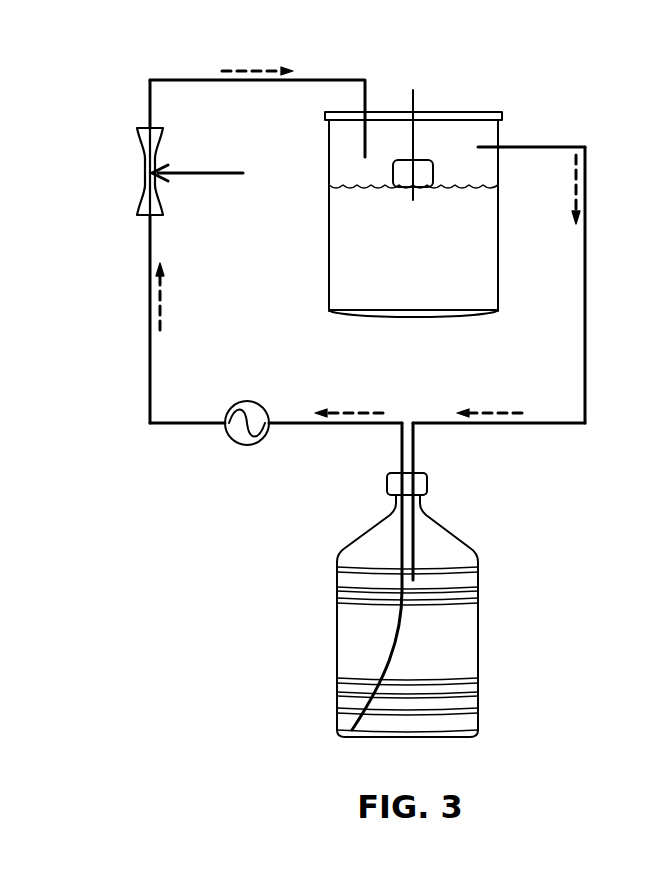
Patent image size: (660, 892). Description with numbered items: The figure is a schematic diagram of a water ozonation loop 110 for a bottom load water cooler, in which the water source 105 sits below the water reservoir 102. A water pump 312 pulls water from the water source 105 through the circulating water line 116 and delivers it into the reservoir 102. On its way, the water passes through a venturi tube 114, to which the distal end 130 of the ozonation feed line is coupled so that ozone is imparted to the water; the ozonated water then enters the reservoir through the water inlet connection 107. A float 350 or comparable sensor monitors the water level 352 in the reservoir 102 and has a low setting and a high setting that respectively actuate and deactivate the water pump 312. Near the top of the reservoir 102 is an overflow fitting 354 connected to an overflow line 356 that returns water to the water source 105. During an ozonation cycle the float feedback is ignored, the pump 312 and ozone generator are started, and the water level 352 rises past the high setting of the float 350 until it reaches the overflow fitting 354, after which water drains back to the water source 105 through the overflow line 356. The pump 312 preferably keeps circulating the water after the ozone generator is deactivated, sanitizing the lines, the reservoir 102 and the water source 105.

The water reservoir 102 is at (505, 92).
The water source 105 is at (444, 532).
The water inlet connection 107 is at (364, 79).
The water ozonation loop 110 is at (194, 440).
The venturi tube 114 is at (154, 140).
The circulating water line 116 is at (151, 335).
The distal end of ozonation feed line 130 is at (176, 178).
The water pump 312 is at (250, 402).
The float 350 is at (415, 160).
The water level 352 is at (470, 188).
The overflow fitting 354 is at (500, 147).
The overflow line 356 is at (585, 256).